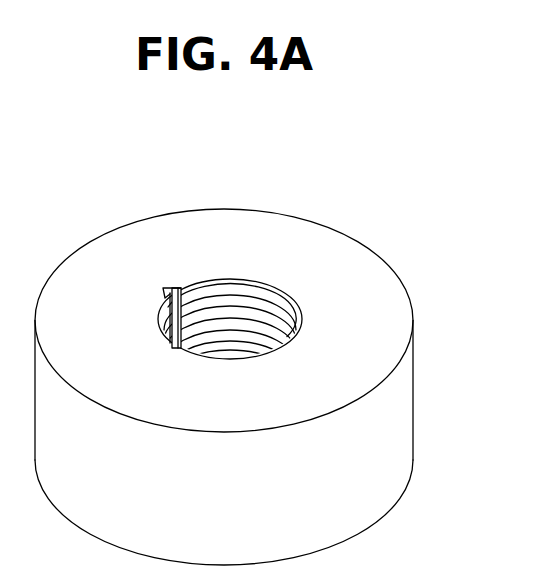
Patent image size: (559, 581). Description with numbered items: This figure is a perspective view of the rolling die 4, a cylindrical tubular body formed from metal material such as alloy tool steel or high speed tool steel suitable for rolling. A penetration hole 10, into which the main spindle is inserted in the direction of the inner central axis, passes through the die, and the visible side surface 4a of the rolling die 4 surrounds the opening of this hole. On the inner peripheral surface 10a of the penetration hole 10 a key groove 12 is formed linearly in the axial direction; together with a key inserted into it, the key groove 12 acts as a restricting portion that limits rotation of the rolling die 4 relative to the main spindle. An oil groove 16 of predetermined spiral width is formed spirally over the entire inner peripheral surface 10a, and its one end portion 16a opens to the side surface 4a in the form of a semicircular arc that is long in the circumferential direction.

The rolling die 4 is at (272, 363).
The one side surface 4a is at (388, 295).
The penetration hole 10 is at (220, 311).
The inner peripheral surface 10a is at (252, 347).
The key groove 12 is at (176, 286).
The oil groove 16 is at (245, 303).
The one end portion 16a is at (286, 293).